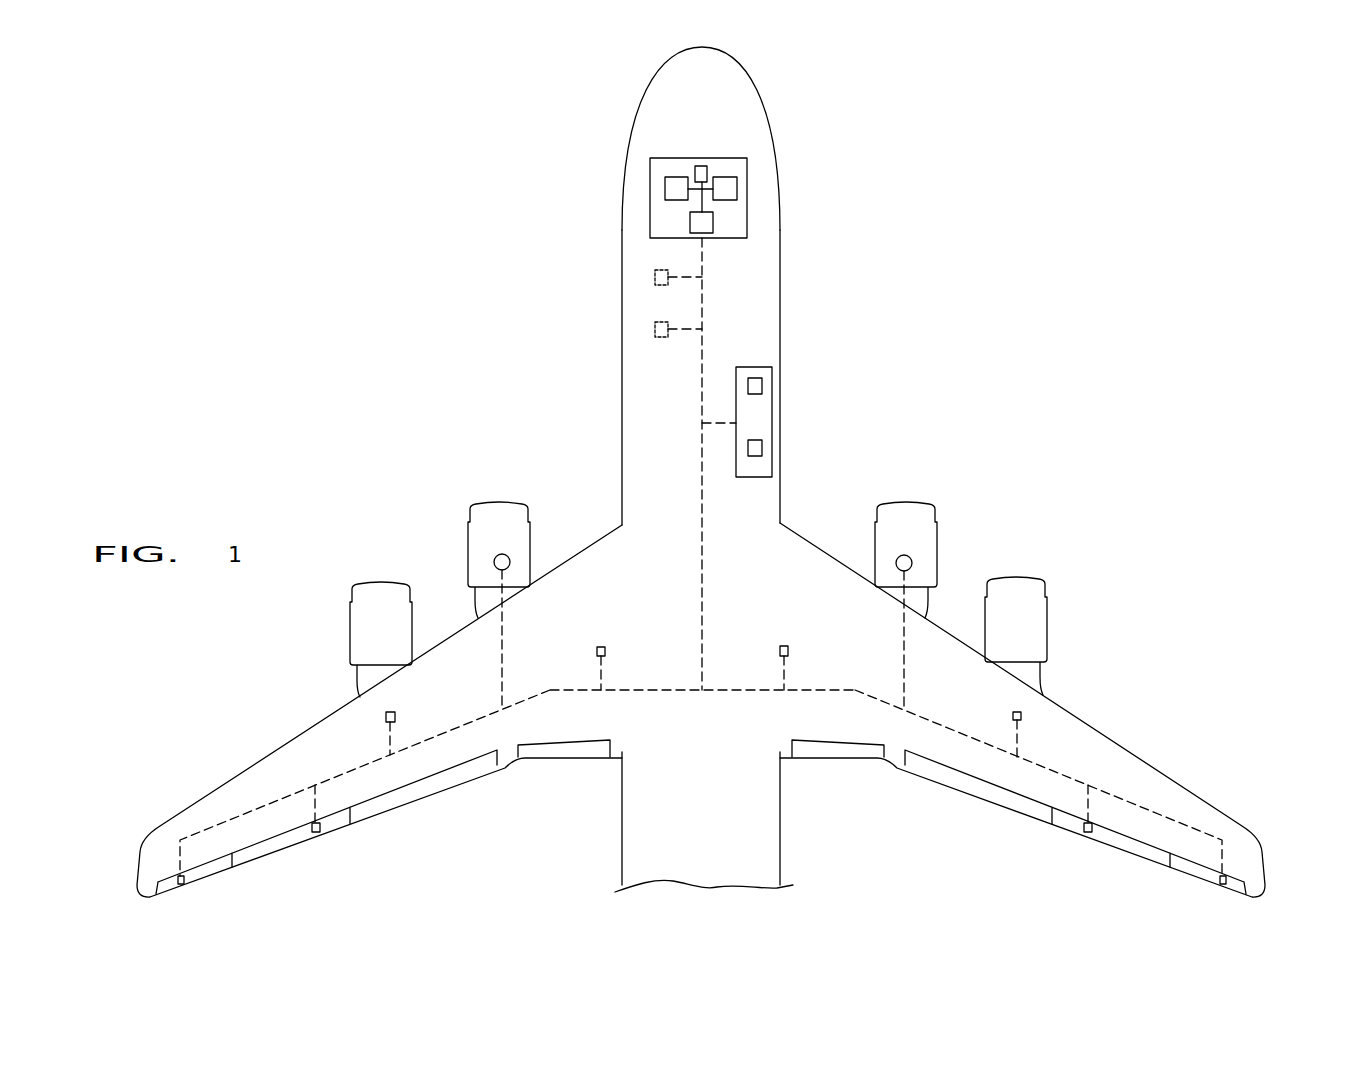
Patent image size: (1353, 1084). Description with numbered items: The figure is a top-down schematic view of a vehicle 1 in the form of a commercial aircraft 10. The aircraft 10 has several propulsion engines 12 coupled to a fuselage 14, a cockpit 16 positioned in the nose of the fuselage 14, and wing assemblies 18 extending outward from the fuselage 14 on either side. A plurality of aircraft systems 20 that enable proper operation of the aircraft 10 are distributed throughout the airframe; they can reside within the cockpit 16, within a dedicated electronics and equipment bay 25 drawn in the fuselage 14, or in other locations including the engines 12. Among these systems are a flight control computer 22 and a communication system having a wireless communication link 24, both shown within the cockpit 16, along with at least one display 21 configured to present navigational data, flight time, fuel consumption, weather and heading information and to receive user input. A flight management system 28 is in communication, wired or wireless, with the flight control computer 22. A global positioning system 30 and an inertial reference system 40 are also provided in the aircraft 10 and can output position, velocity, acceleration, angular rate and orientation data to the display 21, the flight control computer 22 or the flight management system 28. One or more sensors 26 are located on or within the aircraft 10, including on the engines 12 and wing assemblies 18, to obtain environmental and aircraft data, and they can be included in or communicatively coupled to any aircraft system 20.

The vehicle 1 is at (920, 79).
The aircraft 10 is at (602, 96).
The propulsion engine 12 is at (500, 512).
The fuselage 14 is at (760, 283).
The cockpit 16 is at (735, 143).
The wing assembly 18 is at (185, 788).
The aircraft system 20 is at (757, 383).
The display 21 is at (697, 170).
The flight control computer 22 is at (722, 197).
The wireless communication link 24 is at (666, 186).
The electronics and equipment bay 25 is at (772, 410).
The sensor 26 is at (511, 556).
The flight management system 28 is at (696, 221).
The global positioning system 30 is at (655, 276).
The inertial reference system 40 is at (655, 329).